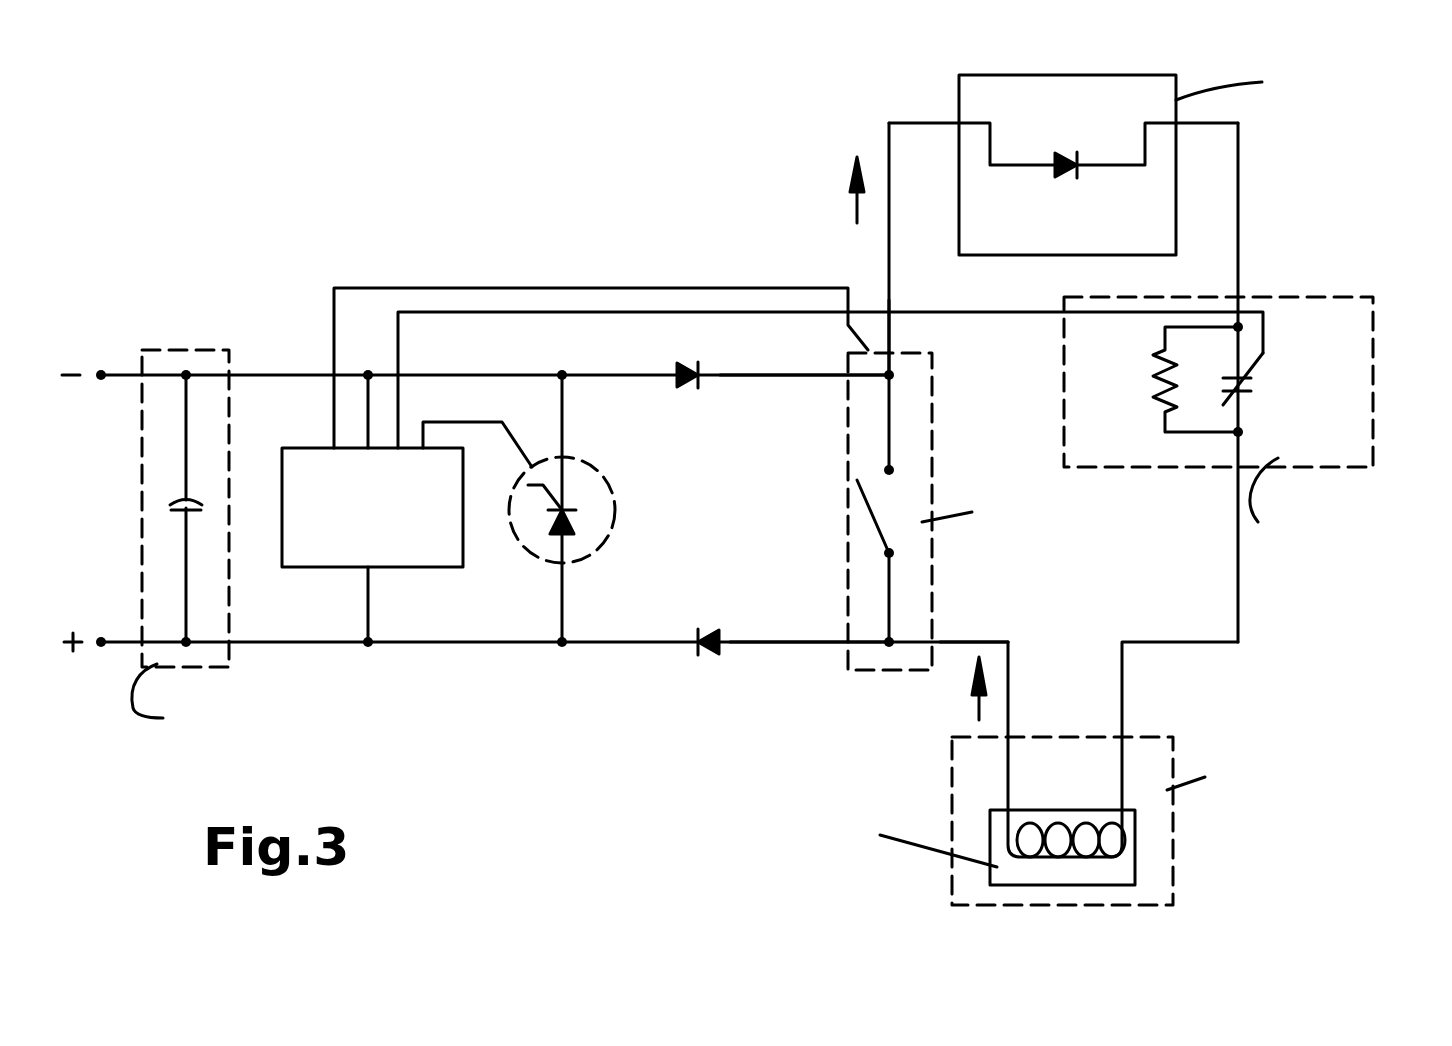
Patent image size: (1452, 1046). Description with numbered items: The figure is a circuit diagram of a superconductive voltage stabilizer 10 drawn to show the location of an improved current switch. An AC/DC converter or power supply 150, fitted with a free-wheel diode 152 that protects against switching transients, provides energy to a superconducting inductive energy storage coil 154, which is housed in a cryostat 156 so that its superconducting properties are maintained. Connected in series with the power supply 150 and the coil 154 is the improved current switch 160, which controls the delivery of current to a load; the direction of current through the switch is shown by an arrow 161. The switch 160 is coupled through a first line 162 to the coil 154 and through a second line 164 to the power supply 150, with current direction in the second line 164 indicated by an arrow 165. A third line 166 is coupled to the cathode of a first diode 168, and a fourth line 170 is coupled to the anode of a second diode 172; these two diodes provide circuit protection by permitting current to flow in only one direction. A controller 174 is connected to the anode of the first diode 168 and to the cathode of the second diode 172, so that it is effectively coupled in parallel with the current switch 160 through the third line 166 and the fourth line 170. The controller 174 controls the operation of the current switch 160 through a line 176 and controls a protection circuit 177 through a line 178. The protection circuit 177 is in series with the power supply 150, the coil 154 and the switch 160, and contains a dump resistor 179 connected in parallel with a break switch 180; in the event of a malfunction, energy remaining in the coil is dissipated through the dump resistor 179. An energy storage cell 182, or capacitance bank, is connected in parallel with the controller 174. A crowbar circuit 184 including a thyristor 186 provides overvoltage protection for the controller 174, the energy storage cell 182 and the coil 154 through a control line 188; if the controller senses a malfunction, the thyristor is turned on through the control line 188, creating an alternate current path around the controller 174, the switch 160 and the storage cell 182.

The superconductive voltage stabilizer 10 is at (638, 766).
The power supply 150 is at (1099, 160).
The free-wheel diode 152 is at (1057, 170).
The coil 154 is at (1003, 837).
The cryostat 156 is at (1066, 802).
The improved current switch 160 is at (865, 672).
The arrow 161 is at (973, 707).
The first line 162 is at (963, 635).
The second line 164 is at (891, 338).
The arrow 165 is at (850, 210).
The third line 166 is at (812, 380).
The first diode 168 is at (677, 380).
The fourth line 170 is at (811, 640).
The second diode 172 is at (708, 652).
The controller 174 is at (340, 568).
The line 176 is at (368, 288).
The protection circuit 177 is at (1229, 393).
The line 178 is at (495, 312).
The dump resistor 179 is at (1158, 370).
The break switch 180 is at (1247, 395).
The energy storage cell 182 is at (183, 348).
The crowbar circuit 184 is at (605, 508).
The thyristor 186 is at (570, 523).
The control line 188 is at (440, 422).